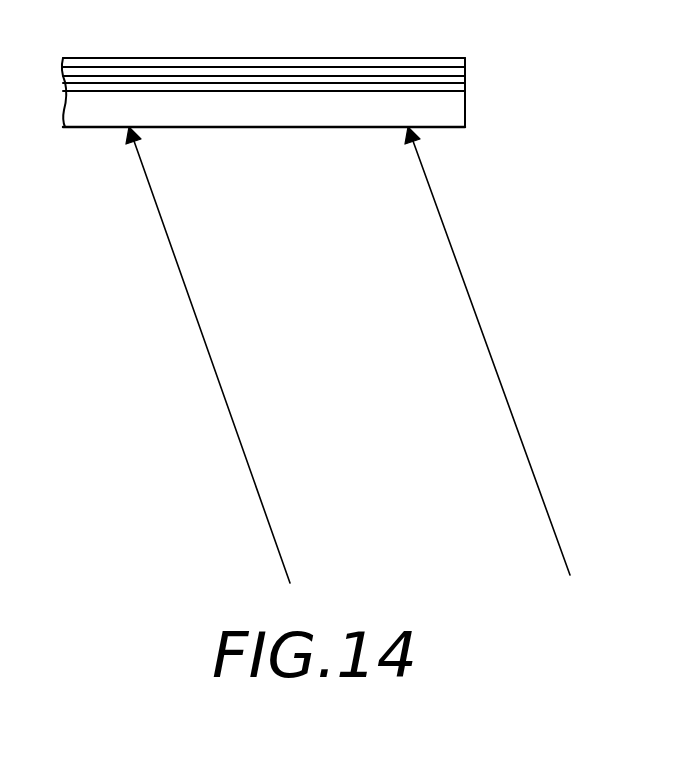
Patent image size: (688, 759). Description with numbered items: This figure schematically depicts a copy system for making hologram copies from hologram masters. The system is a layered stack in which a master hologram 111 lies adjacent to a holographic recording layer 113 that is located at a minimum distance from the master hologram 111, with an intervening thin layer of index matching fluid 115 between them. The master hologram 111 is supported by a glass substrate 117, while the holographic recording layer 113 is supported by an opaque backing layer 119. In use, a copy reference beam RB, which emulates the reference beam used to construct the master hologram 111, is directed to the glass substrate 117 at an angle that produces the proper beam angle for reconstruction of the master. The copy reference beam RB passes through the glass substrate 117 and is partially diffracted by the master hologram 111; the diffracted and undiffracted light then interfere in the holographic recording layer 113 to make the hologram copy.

The master hologram 111 is at (465, 88).
The holographic recording layer 113 is at (465, 70).
The index matching fluid 115 is at (465, 80).
The glass substrate 117 is at (452, 117).
The opaque backing layer 119 is at (465, 62).
The copy reference beam RB is at (502, 385).